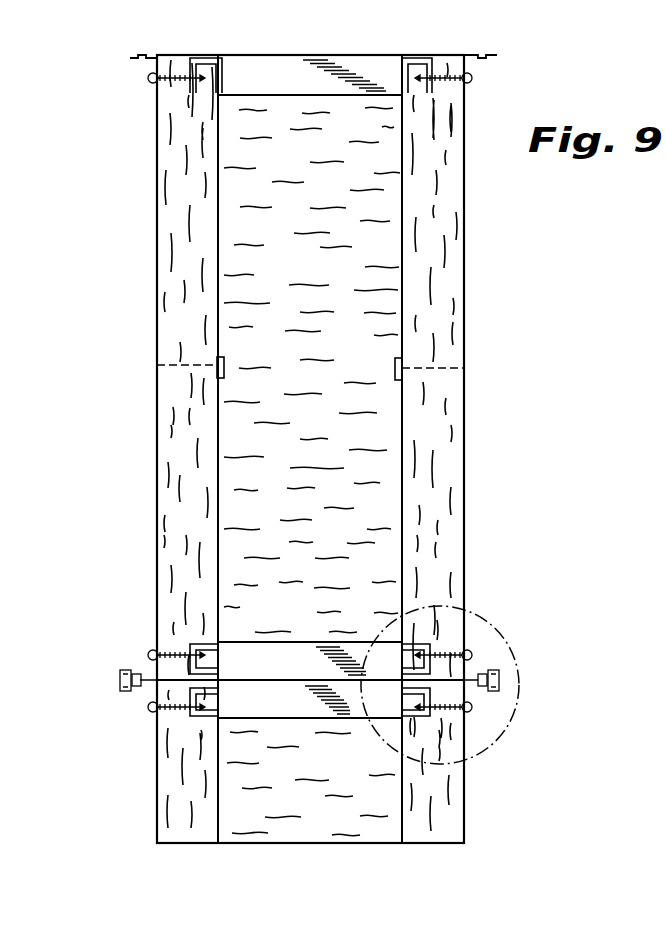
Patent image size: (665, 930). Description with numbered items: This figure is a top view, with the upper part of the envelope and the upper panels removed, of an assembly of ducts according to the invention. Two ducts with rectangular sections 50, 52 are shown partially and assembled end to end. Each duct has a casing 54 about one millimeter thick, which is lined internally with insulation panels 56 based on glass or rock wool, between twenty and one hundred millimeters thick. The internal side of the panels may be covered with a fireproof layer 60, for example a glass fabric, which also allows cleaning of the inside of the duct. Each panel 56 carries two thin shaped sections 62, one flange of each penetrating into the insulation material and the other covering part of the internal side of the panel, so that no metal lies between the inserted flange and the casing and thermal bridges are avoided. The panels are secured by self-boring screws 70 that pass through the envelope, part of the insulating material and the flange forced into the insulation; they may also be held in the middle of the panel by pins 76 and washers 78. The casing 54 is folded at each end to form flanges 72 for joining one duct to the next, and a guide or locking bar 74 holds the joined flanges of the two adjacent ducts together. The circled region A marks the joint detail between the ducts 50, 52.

The duct with rectangular section 50 is at (152, 268).
The duct with rectangular section 52 is at (154, 762).
The casing 54 is at (156, 455).
The insulation panel 56 is at (470, 490).
The fireproof layer 60 is at (226, 210).
The shaped section 62 is at (303, 76).
The screw 70 is at (178, 82).
The flange 72 is at (132, 56).
The guide or locking bar 74 is at (121, 676).
The pin 76 is at (205, 368).
The washer 78 is at (224, 364).
The detail circle A is at (488, 748).